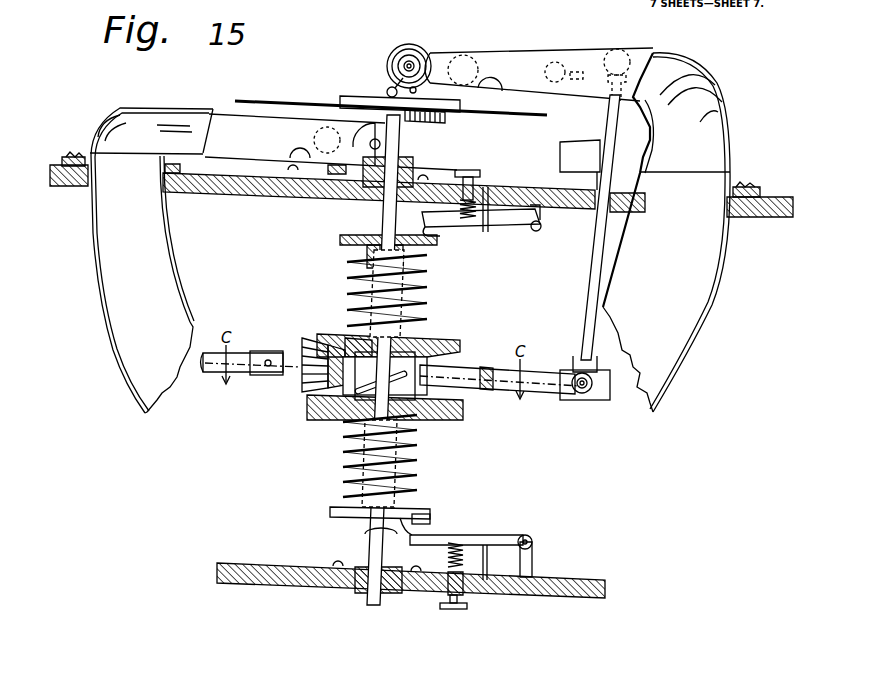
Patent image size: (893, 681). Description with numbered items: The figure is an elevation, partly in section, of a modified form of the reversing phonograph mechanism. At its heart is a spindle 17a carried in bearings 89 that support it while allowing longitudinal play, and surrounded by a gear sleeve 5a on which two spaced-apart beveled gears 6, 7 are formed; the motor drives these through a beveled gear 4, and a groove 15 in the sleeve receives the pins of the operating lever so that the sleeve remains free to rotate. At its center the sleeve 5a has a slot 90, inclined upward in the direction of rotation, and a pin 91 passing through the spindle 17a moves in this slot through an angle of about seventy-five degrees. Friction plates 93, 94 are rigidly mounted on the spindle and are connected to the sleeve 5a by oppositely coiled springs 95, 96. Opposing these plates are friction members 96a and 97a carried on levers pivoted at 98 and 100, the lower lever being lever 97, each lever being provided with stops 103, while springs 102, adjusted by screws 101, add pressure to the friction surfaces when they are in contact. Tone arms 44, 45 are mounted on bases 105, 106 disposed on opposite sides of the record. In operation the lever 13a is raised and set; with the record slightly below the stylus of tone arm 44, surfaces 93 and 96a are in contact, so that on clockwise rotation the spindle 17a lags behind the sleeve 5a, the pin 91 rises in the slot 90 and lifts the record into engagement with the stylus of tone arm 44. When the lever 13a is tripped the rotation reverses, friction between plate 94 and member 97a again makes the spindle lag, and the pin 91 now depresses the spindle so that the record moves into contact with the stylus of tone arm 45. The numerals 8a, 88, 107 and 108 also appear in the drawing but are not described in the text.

The beveled gear 4 is at (302, 378).
The gear sleeve 5a is at (352, 337).
The beveled gear 6 is at (322, 336).
The beveled gear 7 is at (455, 420).
The cross shaft 8a is at (475, 368).
The lever 13a is at (597, 273).
The groove 15 is at (352, 386).
The spindle 17a is at (383, 229).
The tone arm 44 is at (515, 55).
The tone arm 45 is at (147, 117).
The vertical shaft 88 is at (386, 211).
The bearings 89 is at (410, 170).
The slot 90 is at (450, 396).
The pin 91 is at (437, 345).
The friction plate 93 is at (437, 239).
The friction plate 94 is at (432, 511).
The coiled spring 95 is at (430, 273).
The coiled spring 96 is at (425, 456).
The friction member 96a is at (440, 223).
The lever 97 is at (480, 536).
The friction member 97a is at (430, 531).
The pivot 98 is at (542, 226).
The pivot 100 is at (533, 541).
The screws 101 is at (470, 170).
The springs 102 is at (458, 212).
The stops 103 is at (489, 230).
The base 105 is at (738, 191).
The base 106 is at (75, 160).
The left shell 107 is at (151, 260).
The right shell 108 is at (666, 232).